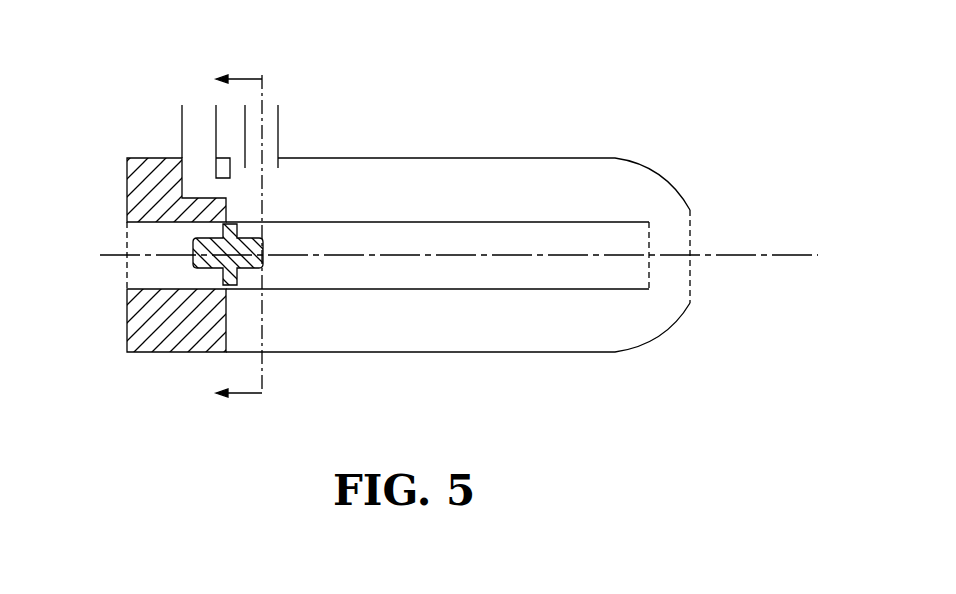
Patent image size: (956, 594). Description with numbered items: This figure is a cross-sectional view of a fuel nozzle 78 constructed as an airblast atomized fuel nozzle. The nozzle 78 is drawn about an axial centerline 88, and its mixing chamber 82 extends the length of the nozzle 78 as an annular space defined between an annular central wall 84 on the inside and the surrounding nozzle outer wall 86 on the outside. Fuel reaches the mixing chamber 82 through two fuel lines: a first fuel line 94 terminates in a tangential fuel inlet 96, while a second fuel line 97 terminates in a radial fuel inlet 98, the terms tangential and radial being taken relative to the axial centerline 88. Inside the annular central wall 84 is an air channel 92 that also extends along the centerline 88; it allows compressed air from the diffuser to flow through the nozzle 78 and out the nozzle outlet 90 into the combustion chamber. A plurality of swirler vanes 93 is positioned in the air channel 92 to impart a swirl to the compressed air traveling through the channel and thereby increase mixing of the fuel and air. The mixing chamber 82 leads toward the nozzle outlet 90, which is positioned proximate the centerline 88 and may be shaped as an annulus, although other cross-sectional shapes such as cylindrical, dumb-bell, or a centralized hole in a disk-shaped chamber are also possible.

The nozzle 78 is at (618, 367).
The mixing chamber 82 is at (463, 320).
The annular central wall 84 is at (427, 221).
The nozzle outer wall 86 is at (528, 158).
The centerline 88 is at (108, 257).
The nozzle outlet 90 is at (673, 238).
The air channel 92 is at (425, 268).
The swirler vanes 93 is at (224, 272).
The first fuel line 94 is at (198, 128).
The tangential fuel inlet 96 is at (185, 158).
The second fuel line 97 is at (265, 98).
The radial fuel inlet 98 is at (268, 158).